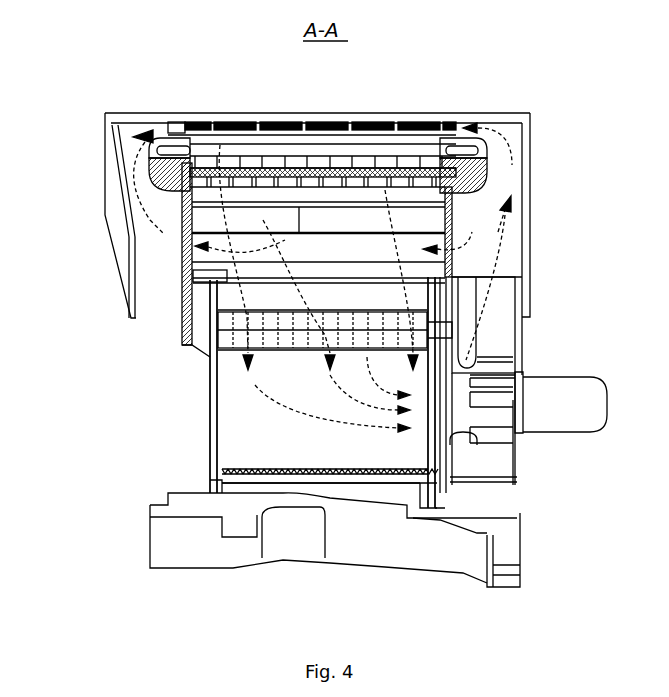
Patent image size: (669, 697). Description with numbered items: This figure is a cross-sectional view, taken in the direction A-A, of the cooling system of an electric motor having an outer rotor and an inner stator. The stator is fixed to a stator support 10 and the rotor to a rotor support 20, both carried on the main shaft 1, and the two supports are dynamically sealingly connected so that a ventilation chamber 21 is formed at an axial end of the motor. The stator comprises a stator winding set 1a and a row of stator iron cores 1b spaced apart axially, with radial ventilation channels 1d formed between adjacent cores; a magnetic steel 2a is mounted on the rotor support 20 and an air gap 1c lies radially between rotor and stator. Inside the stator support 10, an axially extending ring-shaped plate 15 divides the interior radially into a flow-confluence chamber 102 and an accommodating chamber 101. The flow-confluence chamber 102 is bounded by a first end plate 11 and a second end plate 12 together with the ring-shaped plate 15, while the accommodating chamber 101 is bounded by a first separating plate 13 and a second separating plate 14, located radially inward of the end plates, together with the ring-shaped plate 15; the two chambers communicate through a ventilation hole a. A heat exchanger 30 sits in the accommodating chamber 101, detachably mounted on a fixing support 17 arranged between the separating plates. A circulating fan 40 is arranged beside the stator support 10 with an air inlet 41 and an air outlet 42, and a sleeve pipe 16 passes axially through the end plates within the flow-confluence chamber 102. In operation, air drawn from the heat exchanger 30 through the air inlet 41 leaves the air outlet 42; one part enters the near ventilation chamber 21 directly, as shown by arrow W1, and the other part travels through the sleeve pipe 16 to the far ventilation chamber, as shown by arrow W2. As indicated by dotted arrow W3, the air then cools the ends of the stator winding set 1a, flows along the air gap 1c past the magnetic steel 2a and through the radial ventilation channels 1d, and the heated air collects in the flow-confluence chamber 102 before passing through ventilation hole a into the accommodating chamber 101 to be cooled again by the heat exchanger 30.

The main shaft 1 is at (205, 533).
The stator winding set 1a is at (380, 135).
The stator iron cores 1b is at (440, 147).
The air gap 1c is at (258, 147).
The radial ventilation channels 1d is at (337, 162).
The magnetic steel 2a is at (190, 123).
The stator support 10 is at (213, 402).
The accommodating chamber 101 is at (230, 443).
The flow-confluence chamber 102 is at (223, 270).
The first end plate 11 is at (465, 235).
The second end plate 12 is at (165, 235).
The first separating plate 13 is at (437, 457).
The second separating plate 14 is at (215, 418).
The ring-shaped plate 15 is at (530, 227).
The sleeve pipe 16 is at (325, 217).
The fixing support 17 is at (358, 445).
The rotor support 20 is at (170, 113).
The ventilation chamber 21 is at (185, 215).
The heat exchanger 30 is at (213, 362).
The circulating fan 40 is at (507, 347).
The air inlet 41 is at (415, 440).
The air outlet 42 is at (500, 300).
The ventilation hole a is at (263, 218).
The arrow W1 is at (489, 215).
The arrow W2 is at (307, 244).
The arrow W3 is at (332, 394).